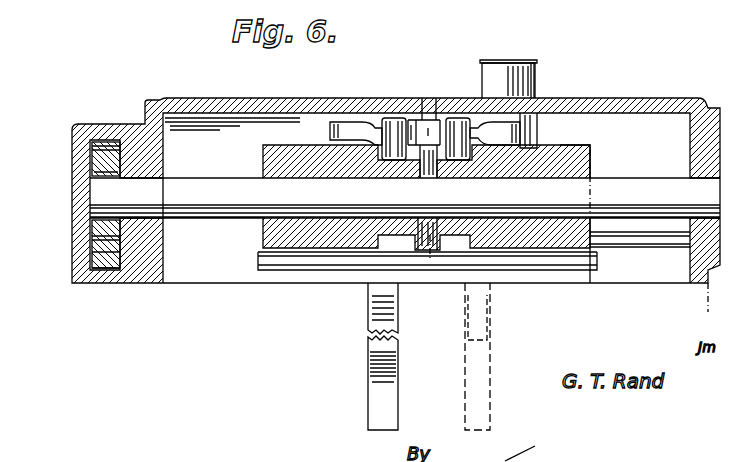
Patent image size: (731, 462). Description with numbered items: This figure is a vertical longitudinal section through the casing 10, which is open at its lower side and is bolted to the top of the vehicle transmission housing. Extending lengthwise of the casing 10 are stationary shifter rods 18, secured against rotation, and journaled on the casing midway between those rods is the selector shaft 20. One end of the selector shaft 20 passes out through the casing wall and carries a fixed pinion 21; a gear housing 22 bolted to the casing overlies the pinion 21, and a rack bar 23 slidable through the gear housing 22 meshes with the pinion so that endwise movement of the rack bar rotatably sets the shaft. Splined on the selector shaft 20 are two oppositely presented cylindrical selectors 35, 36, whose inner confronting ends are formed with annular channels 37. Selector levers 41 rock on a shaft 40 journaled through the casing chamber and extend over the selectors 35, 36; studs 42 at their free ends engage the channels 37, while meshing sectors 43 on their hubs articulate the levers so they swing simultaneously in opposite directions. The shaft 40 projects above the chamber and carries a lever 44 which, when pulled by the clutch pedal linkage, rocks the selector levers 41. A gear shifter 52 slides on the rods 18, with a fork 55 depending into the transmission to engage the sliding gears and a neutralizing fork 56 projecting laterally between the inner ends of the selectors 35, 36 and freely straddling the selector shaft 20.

The casing 10 is at (612, 108).
The stationary shifter rods 18 is at (656, 240).
The selector shaft 20 is at (634, 185).
The pinion 21 is at (104, 228).
The gear housing 22 is at (90, 181).
The rack bar 23 is at (105, 283).
The selector 35 is at (590, 152).
The selector 36 is at (265, 151).
The annular channels 37 is at (466, 230).
The shaft 40 is at (496, 60).
The selector levers 41 is at (370, 140).
The studs 42 is at (396, 135).
The meshing sectors 43 is at (439, 138).
The lever 44 is at (534, 64).
The gear shifter 52 is at (564, 258).
The forks 55 is at (378, 309).
The neutralizing forks 56 is at (430, 162).